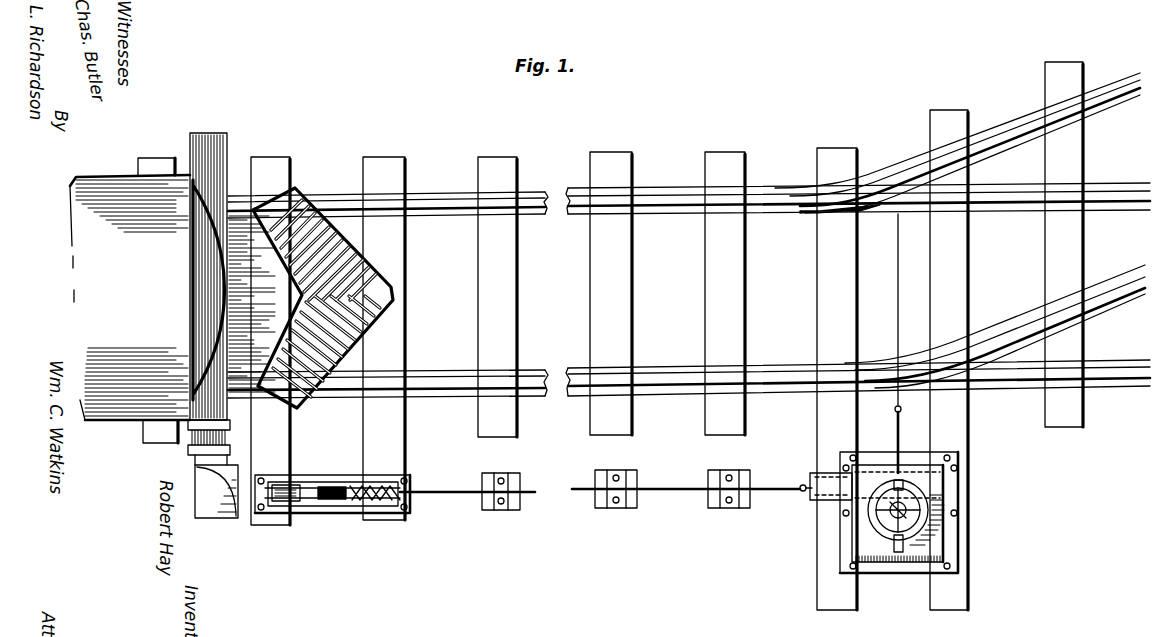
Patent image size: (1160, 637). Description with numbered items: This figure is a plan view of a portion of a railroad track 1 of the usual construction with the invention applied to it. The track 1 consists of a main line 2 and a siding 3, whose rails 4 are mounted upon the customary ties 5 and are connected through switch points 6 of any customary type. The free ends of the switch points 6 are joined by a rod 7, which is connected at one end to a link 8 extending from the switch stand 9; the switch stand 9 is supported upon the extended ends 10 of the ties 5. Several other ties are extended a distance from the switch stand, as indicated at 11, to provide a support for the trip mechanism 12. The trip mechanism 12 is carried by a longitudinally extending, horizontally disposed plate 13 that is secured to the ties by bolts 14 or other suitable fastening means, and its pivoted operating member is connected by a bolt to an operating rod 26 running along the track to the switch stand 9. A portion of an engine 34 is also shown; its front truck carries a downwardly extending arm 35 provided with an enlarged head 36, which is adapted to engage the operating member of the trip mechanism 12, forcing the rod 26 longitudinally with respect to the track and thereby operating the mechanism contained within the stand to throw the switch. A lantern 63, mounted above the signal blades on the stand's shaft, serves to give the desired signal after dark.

The railroad track 1 is at (849, 174).
The main line 2 is at (348, 298).
The siding 3 is at (1116, 114).
The rails 4 is at (428, 200).
The ties 5 is at (710, 160).
The switch points 6 is at (1015, 200).
The rod 7 is at (895, 265).
The link 8 is at (896, 415).
The switch stand 9 is at (957, 535).
The extended ends of the ties 10 is at (945, 583).
The extended tie ends 11 is at (370, 433).
The trip mechanism 12 is at (323, 505).
The plate 13 is at (357, 515).
The bolts 14 is at (412, 506).
The operating rod 26 is at (672, 490).
The engine 34 is at (172, 288).
The downwardly extending arm 35 is at (198, 435).
The enlarged head 36 is at (219, 515).
The lantern 63 is at (960, 510).